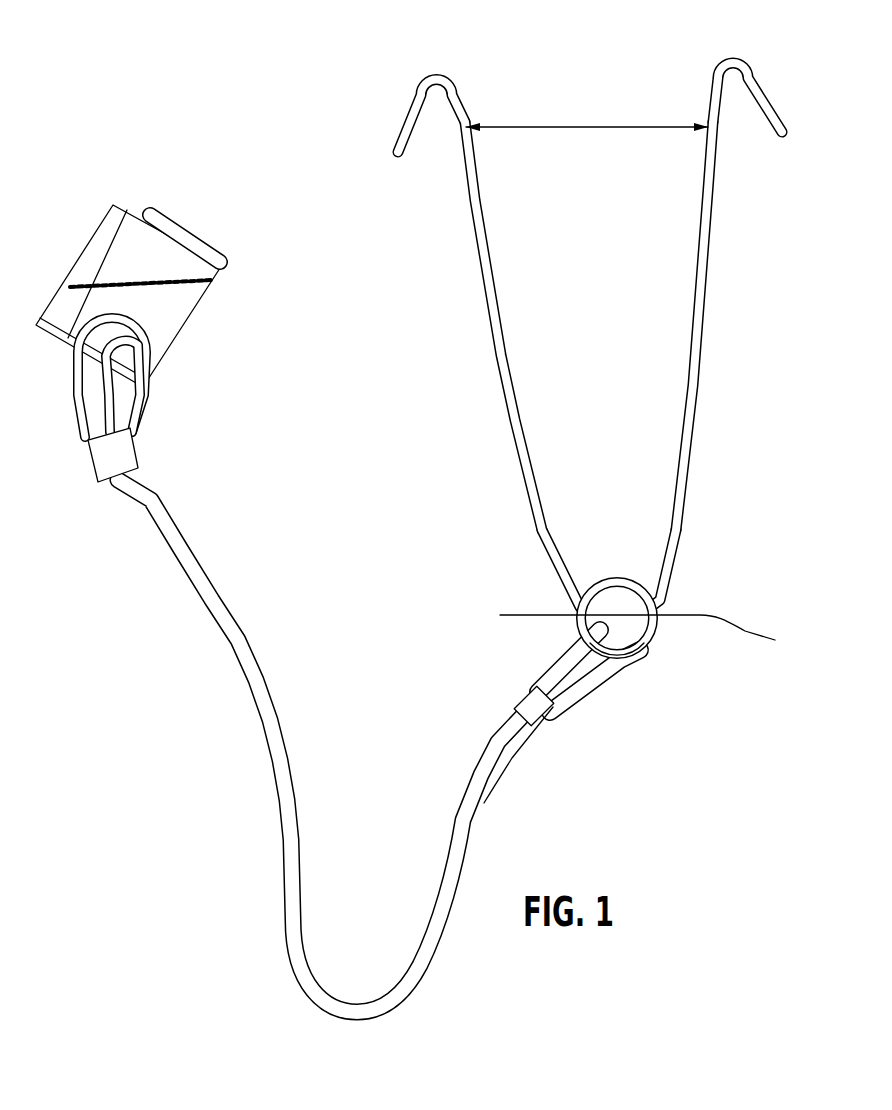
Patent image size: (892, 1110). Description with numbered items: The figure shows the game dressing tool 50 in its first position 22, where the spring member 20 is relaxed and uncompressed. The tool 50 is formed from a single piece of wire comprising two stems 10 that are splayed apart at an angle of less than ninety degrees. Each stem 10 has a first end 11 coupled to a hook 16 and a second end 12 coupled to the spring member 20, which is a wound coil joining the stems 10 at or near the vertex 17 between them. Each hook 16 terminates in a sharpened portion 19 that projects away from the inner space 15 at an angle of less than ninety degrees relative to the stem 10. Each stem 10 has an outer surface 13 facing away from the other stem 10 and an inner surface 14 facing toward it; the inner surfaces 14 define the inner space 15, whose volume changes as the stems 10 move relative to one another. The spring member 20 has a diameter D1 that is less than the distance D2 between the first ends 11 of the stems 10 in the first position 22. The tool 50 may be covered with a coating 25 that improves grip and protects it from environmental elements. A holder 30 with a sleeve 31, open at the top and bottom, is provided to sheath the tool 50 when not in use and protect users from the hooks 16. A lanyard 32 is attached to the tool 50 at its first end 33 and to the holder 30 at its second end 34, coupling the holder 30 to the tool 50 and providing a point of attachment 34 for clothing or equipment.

The stem 10 is at (465, 277).
The first end 11 is at (698, 196).
The second end 12 is at (545, 585).
The outer surface 13 is at (498, 354).
The inner surface 14 is at (680, 476).
The inner space 15 is at (670, 265).
The hook 16 is at (408, 70).
The vertex 17 is at (626, 666).
The sharpened portion 19 is at (392, 137).
The spring member 20 is at (617, 542).
The first position 22 is at (410, 470).
The coating 25 is at (700, 430).
The holder 30 is at (116, 164).
The sleeve 31 is at (170, 360).
The lanyard 32 is at (250, 720).
The first end 33 is at (556, 636).
The second end 34 is at (77, 398).
The game dressing tool 50 is at (175, 115).
The diameter D1 is at (659, 634).
The distance D2 is at (587, 144).